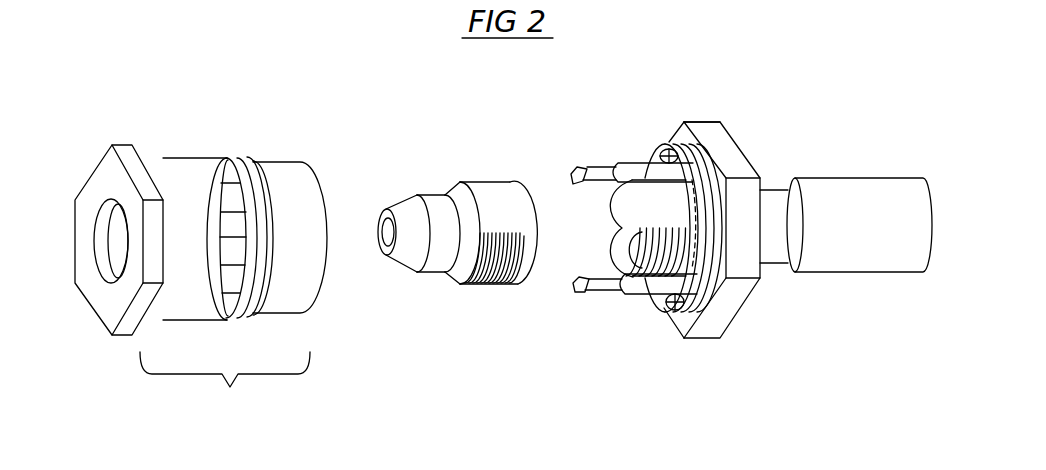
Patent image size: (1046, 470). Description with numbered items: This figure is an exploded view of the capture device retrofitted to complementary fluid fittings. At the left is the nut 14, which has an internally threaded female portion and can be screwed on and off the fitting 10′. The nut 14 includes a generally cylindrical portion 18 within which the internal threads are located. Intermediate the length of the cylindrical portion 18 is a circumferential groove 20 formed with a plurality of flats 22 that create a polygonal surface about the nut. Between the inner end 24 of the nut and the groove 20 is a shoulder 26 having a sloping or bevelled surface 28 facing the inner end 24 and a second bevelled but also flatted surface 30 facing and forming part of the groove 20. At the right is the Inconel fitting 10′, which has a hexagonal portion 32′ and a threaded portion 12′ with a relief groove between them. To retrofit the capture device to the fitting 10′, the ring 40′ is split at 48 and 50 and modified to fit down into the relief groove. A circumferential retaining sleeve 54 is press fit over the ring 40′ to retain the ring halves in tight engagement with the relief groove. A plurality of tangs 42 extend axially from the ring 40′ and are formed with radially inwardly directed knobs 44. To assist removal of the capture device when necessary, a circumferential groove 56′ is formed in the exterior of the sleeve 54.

The fitting 10′ is at (835, 185).
The threaded portion 12′ is at (483, 192).
The nut 14 is at (110, 170).
The cylindrical portion 18 is at (225, 384).
The circumferential groove 20 is at (212, 305).
The flats 22 is at (220, 190).
The inner end 24 is at (302, 250).
The shoulder 26 is at (245, 175).
The bevelled surface 28 is at (262, 192).
The flatted bevelled surface 30 is at (245, 218).
The hexagonal portion 32′ is at (720, 140).
The ring 40′ is at (662, 152).
The tangs 42 is at (637, 285).
The knobs 44 is at (580, 284).
The split 48 is at (697, 122).
The split 50 is at (665, 310).
The retaining sleeve 54 is at (697, 283).
The circumferential groove 56′ is at (712, 177).